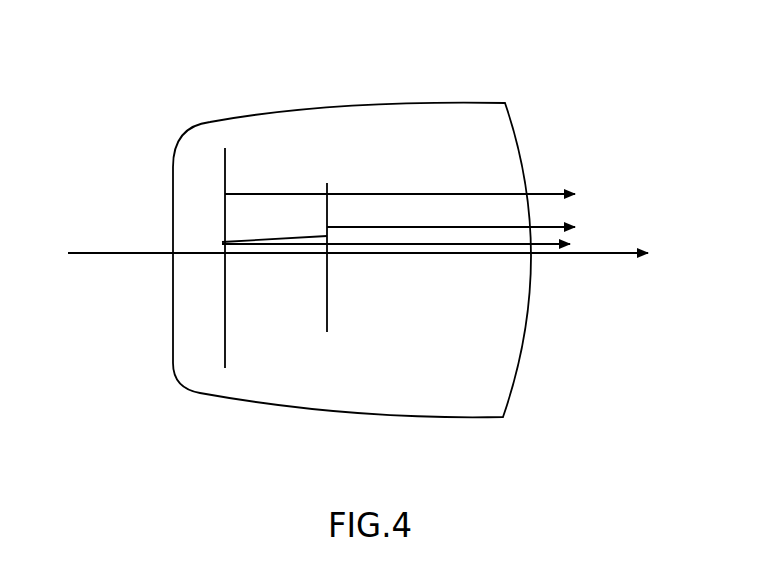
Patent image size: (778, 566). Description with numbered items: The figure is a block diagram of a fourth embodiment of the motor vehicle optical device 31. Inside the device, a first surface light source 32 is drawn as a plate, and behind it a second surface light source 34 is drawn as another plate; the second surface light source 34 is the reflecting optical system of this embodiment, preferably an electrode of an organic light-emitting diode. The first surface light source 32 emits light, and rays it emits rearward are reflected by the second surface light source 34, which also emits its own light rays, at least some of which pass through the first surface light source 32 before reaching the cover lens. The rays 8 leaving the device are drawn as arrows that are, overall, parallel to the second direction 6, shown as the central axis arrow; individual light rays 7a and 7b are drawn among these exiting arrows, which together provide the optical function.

The optical device 31 is at (505, 67).
The second direction 6 is at (612, 253).
The second surface light source 34 is at (225, 323).
The first surface light source 32 is at (329, 310).
The light ray 7a is at (312, 237).
The light ray 7b is at (489, 193).
The rays 8 is at (510, 247).